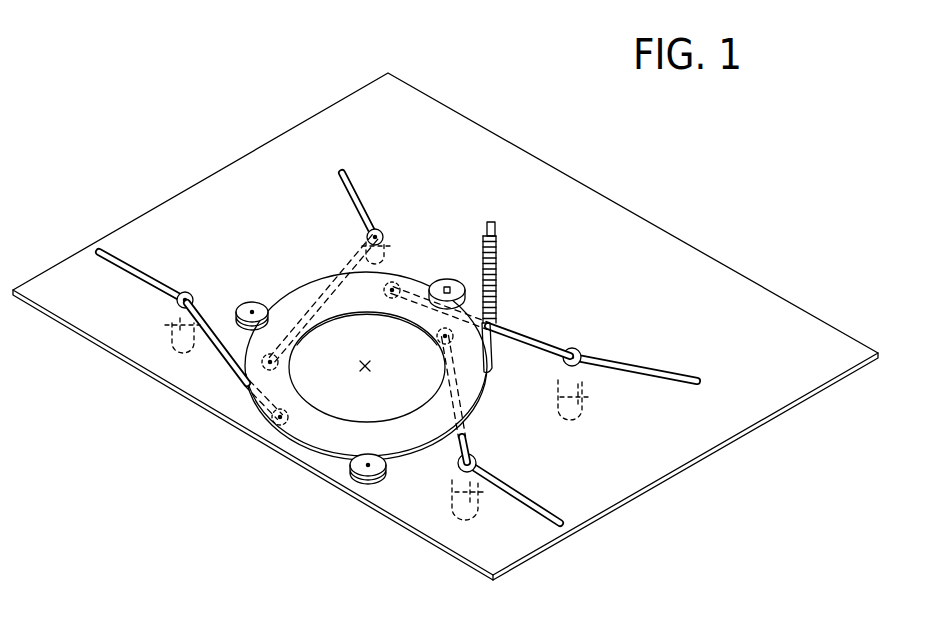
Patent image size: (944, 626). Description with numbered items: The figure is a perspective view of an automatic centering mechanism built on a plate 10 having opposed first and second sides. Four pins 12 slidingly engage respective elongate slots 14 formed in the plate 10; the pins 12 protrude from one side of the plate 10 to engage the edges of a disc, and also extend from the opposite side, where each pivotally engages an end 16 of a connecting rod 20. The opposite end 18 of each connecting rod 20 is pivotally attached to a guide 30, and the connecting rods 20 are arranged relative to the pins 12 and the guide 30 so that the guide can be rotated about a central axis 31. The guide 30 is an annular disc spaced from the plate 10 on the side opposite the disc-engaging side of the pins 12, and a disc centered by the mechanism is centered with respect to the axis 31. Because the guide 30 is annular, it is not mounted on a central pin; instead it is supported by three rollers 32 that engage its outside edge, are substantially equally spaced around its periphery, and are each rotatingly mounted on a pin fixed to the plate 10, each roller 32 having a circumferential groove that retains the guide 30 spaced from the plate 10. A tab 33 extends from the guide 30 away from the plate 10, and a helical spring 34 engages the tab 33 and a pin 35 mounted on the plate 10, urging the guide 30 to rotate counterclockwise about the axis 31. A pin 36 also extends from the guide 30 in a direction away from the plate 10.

The plate 10 is at (672, 256).
The pins 12 is at (165, 343).
The elongate slots 14 is at (142, 272).
The end of connecting rod 16 is at (195, 293).
The opposite end of connecting rod 18 is at (297, 355).
The connecting rods 20 is at (350, 260).
The guide 30 is at (304, 455).
The central axis 31 is at (367, 370).
The rollers 32 is at (260, 300).
The tab 33 is at (495, 353).
The helical spring 34 is at (500, 270).
The pin 35 is at (492, 224).
The pin 36 is at (428, 413).